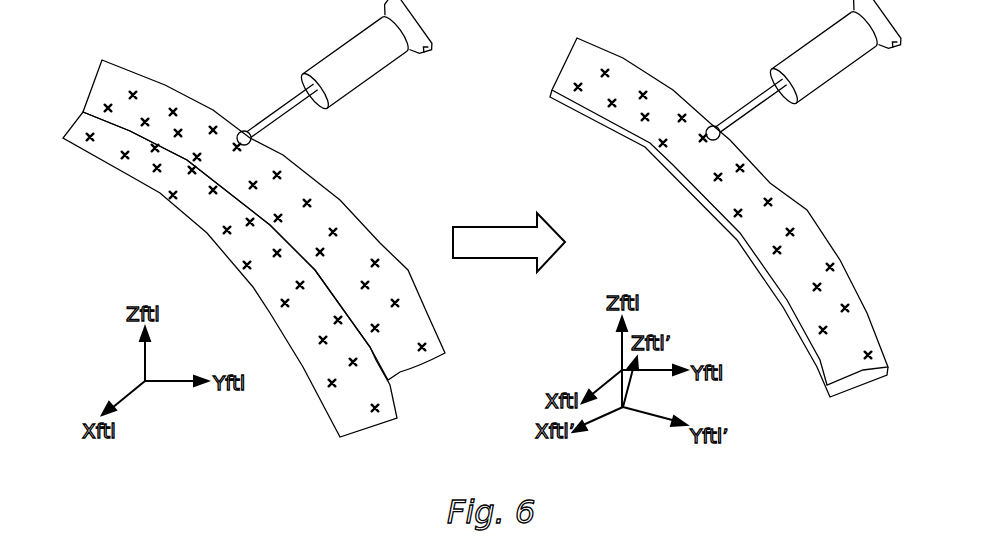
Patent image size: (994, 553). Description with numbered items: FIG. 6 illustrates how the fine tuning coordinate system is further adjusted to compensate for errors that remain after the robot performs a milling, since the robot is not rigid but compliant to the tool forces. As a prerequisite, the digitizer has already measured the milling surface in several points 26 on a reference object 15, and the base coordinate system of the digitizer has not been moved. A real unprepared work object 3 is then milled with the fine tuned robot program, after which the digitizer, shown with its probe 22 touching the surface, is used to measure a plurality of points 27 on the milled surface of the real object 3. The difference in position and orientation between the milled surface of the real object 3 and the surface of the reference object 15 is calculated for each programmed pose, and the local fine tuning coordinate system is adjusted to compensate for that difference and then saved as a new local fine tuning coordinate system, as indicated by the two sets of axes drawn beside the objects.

The work object 3 is at (412, 317).
The reference object 15 is at (367, 397).
The measuring probe 22 is at (280, 113).
The points on reference object 26 is at (377, 408).
The points on milled surface 27 is at (412, 290).